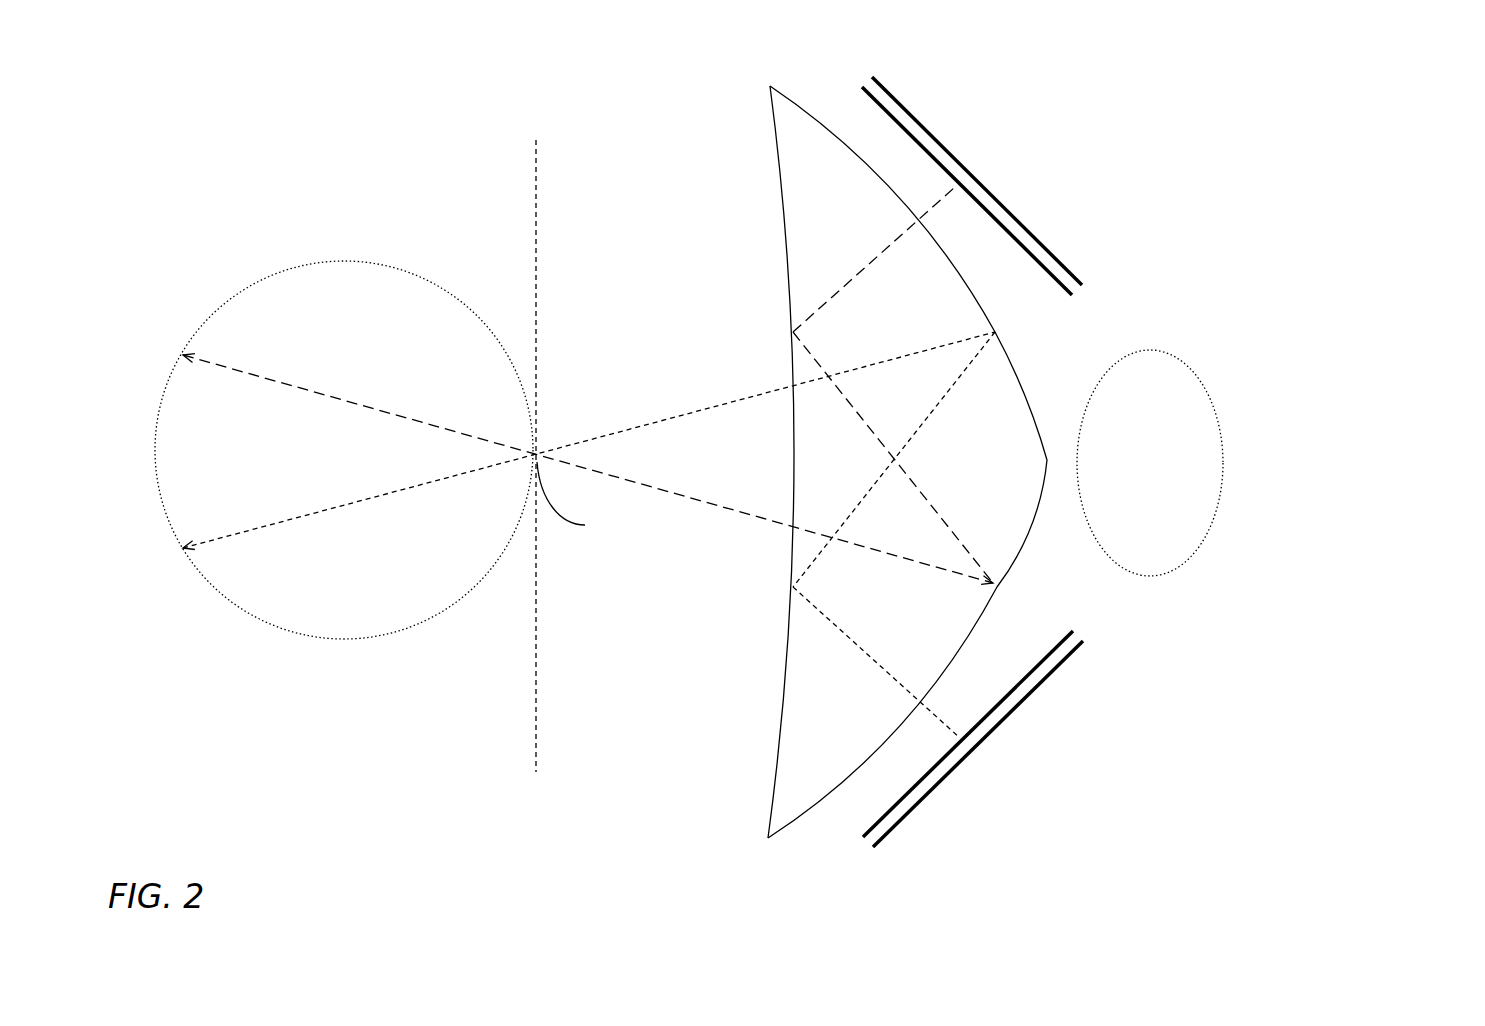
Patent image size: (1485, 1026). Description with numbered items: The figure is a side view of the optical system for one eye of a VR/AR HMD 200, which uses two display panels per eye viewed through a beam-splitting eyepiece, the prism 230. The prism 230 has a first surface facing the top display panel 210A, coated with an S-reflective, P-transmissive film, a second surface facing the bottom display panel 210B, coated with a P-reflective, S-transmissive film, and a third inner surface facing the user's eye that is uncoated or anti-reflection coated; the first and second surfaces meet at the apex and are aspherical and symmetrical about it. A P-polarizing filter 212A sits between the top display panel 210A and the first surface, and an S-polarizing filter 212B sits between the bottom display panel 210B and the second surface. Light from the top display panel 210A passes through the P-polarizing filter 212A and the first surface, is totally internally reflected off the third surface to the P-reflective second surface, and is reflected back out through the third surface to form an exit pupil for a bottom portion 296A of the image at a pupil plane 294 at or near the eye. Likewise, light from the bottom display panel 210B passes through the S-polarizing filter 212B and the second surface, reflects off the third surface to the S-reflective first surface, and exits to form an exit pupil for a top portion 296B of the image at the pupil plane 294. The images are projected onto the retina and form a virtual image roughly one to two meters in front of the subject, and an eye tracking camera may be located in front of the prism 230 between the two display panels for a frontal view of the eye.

The VR/AR HMD 200 is at (1175, 191).
The pupil plane 294 is at (538, 147).
The prism 230 is at (912, 462).
The top display panel 210A is at (957, 183).
The bottom display panel 210B is at (948, 773).
The P-polarizing filter 212A is at (860, 85).
The S-polarizing filter 212B is at (863, 840).
The bottom portion of image 296A is at (780, 556).
The top portion of image 296B is at (785, 387).